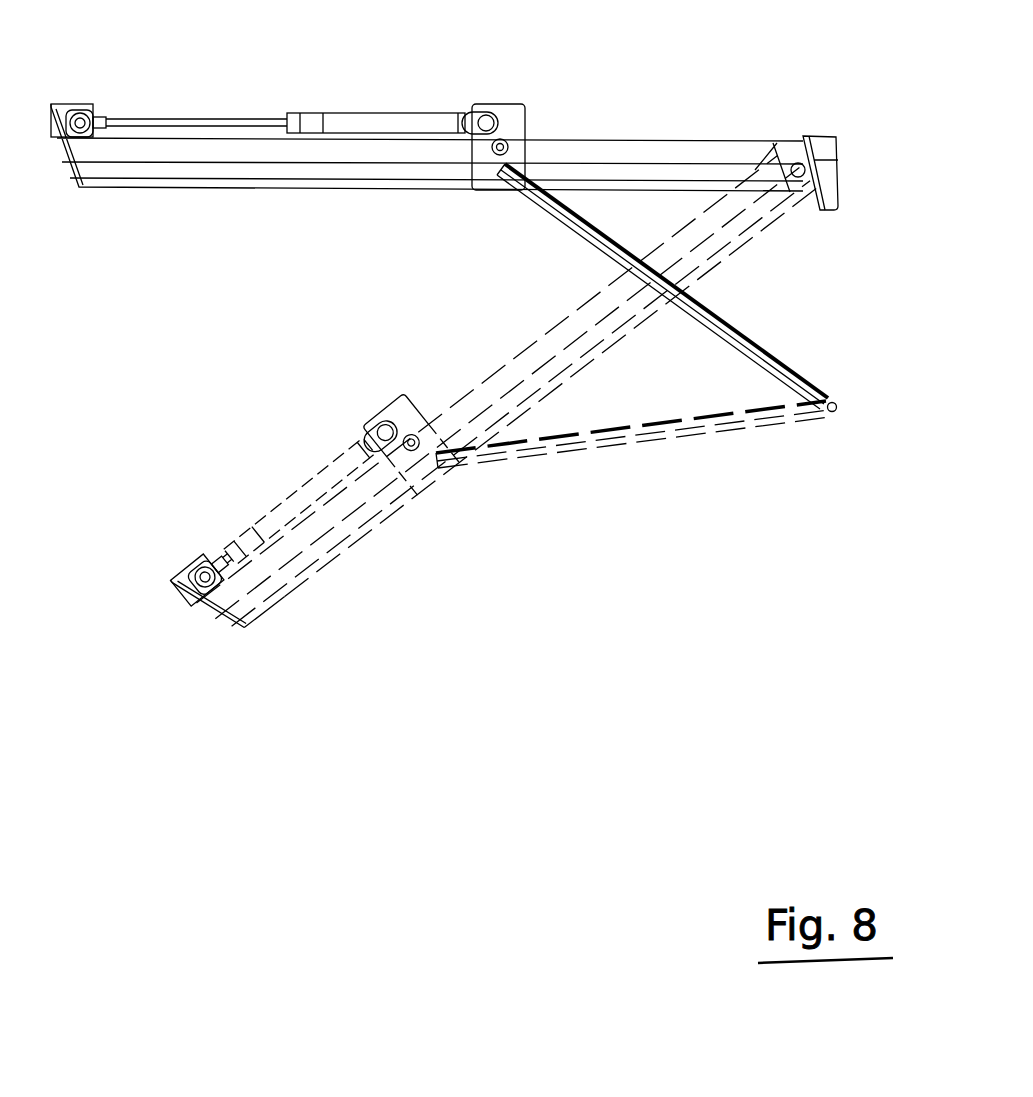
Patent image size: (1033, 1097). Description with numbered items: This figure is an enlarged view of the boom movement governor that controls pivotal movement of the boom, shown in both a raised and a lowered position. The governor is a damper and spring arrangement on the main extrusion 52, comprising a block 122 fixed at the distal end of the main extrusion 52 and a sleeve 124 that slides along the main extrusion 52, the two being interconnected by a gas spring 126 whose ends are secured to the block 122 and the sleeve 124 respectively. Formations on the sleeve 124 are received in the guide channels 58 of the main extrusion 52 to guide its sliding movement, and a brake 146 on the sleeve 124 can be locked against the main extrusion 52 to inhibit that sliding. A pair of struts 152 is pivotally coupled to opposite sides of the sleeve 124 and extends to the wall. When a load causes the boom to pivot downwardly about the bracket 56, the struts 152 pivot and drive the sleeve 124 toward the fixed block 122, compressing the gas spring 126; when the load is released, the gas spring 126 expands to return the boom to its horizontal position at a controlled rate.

The main extrusion 52 is at (150, 190).
The bracket 56 is at (820, 142).
The guide channels 58 is at (272, 170).
The block 122 is at (65, 110).
The sleeve 124 is at (514, 113).
The gas spring 126 is at (335, 105).
The brake 146 is at (510, 144).
The struts 152 is at (768, 357).